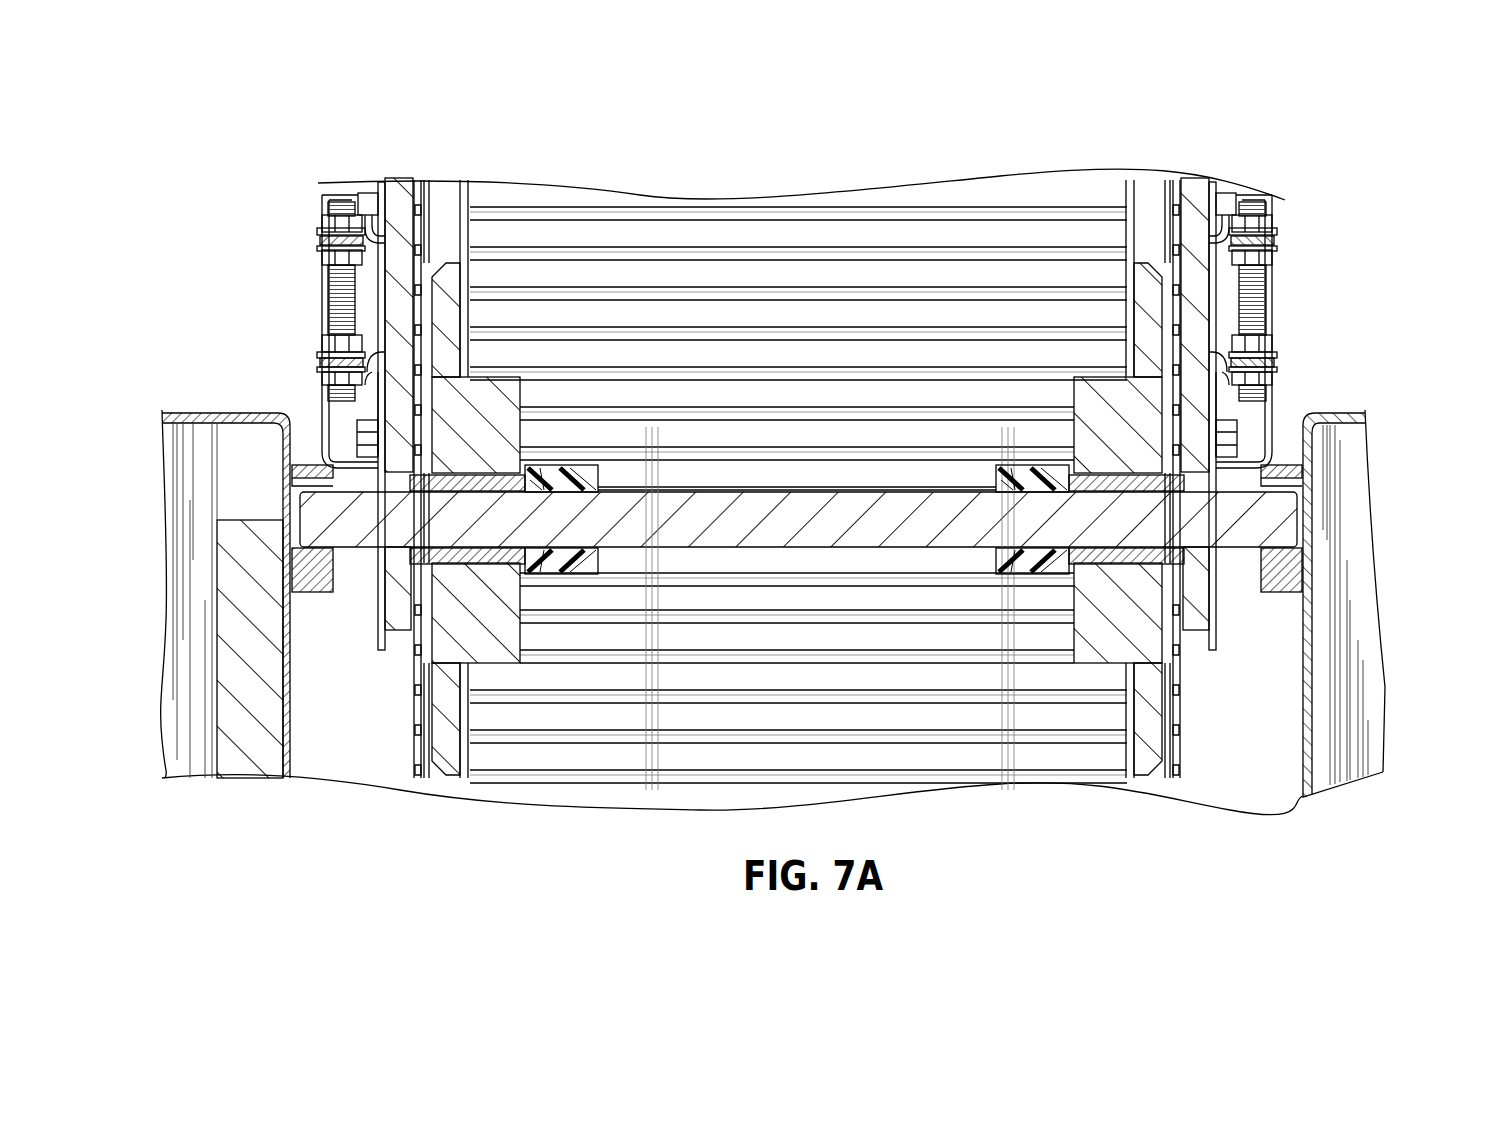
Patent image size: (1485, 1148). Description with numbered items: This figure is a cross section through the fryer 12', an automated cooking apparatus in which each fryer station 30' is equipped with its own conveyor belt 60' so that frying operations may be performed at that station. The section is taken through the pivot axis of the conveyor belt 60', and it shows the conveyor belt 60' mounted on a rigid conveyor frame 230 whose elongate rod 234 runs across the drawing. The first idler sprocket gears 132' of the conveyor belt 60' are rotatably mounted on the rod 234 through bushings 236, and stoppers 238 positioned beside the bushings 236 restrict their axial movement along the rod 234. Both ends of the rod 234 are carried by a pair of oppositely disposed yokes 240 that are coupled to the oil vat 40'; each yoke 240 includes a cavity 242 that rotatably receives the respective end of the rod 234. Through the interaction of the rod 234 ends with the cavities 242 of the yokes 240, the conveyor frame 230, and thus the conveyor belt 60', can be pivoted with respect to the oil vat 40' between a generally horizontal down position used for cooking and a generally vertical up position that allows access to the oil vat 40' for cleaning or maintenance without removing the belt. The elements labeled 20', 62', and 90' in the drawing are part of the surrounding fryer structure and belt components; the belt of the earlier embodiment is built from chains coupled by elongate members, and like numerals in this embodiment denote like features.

The fryer 12' is at (218, 148).
The housing 20' is at (225, 623).
The fryer station 30' is at (751, 416).
The oil vat 40' is at (837, 620).
The conveyor belt 60' is at (798, 462).
The end plate 62' is at (801, 446).
The lamination stack 90' is at (797, 459).
The first idler sprocket gear 132' is at (797, 556).
The conveyor frame 230 is at (383, 290).
The elongate rod 234 is at (312, 506).
The bushing 236 is at (540, 473).
The stopper 238 is at (597, 465).
The yoke 240 is at (303, 570).
The cavity 242 is at (292, 478).